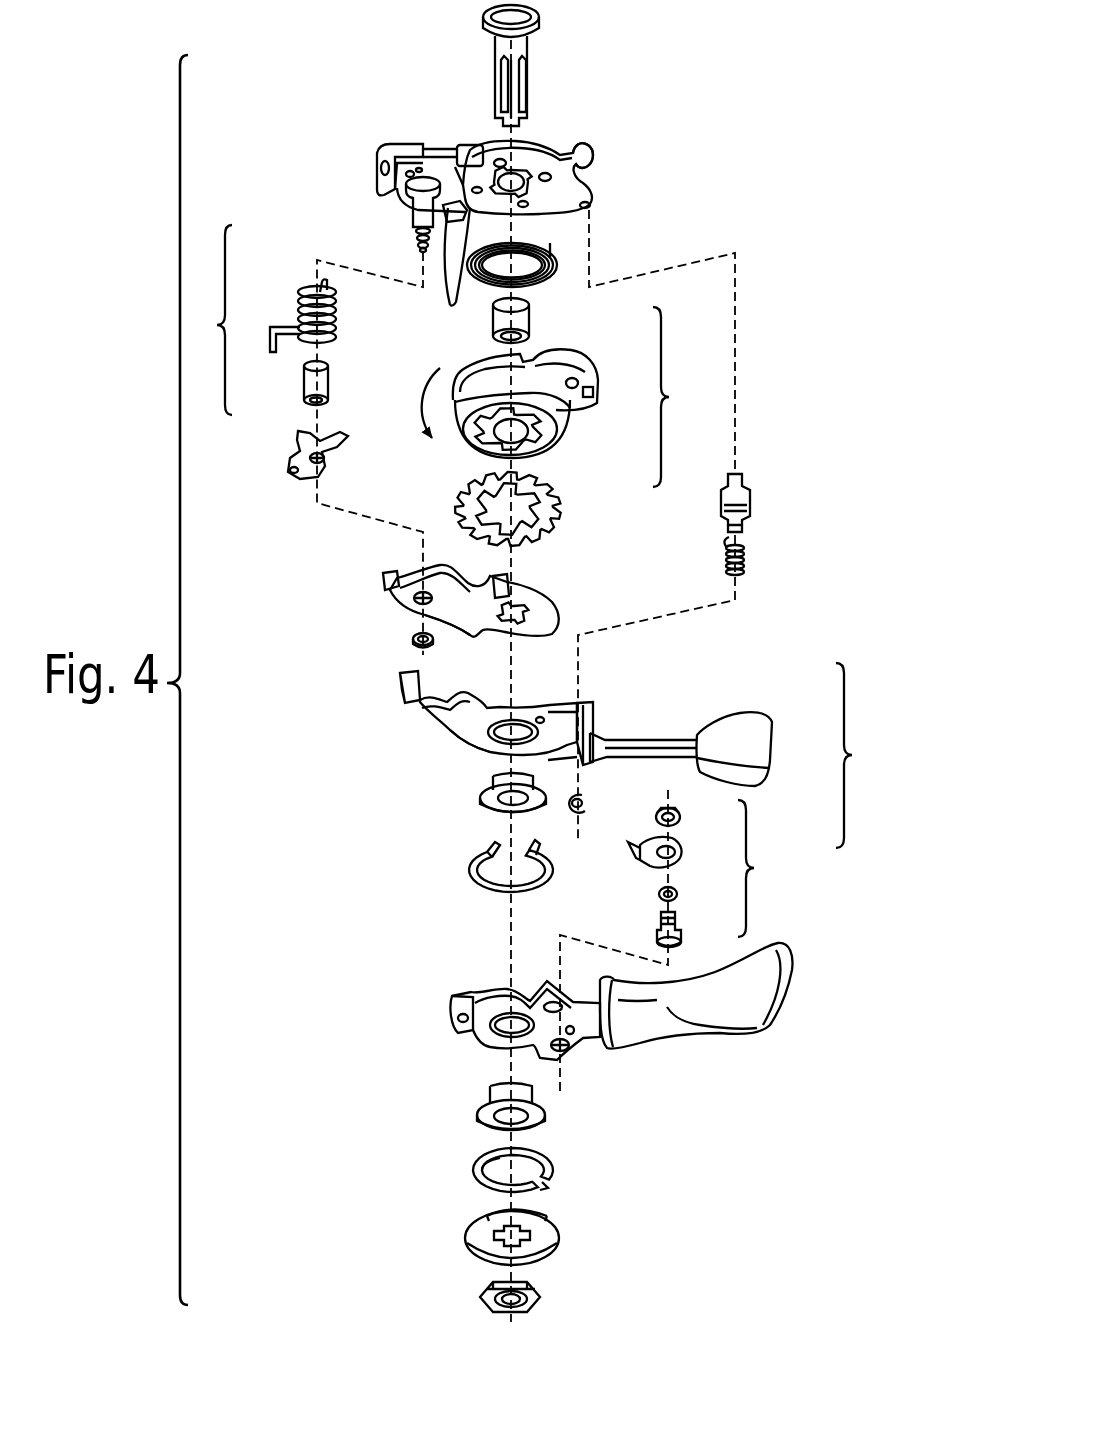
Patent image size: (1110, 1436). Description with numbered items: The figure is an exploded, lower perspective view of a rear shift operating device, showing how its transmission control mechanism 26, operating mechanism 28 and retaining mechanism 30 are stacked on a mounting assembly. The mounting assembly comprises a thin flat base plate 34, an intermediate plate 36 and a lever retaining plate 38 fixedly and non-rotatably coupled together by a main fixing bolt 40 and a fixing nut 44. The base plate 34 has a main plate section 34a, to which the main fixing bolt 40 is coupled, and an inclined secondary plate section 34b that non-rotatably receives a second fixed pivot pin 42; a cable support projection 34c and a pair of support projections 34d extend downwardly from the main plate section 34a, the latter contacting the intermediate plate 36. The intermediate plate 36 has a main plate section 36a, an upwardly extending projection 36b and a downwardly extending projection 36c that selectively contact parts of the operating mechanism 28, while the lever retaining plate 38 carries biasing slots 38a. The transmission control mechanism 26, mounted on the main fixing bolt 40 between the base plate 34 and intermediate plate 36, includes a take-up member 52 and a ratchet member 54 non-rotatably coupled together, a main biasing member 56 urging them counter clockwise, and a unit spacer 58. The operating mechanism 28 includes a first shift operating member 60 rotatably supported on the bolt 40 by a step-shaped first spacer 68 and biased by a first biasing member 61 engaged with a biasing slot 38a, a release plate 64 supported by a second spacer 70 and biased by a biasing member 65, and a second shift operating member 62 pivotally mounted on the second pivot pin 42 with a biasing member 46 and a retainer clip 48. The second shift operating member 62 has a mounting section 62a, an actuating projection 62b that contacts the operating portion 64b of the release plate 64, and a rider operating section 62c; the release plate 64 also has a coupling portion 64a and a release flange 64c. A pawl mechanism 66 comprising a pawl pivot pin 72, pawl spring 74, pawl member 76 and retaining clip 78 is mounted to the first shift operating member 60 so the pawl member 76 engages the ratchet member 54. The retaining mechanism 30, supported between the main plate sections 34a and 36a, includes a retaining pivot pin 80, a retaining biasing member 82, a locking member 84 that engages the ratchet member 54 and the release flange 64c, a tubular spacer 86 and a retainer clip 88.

The transmission control mechanism 26 is at (681, 397).
The operating mechanism 28 is at (860, 755).
The retaining mechanism 30 is at (207, 320).
The base plate 34 is at (553, 141).
The main plate section 34a is at (503, 142).
The secondary plate section 34b is at (593, 194).
The cable support projection 34c is at (377, 170).
The support projections 34d is at (453, 270).
The intermediate plate 36 is at (414, 610).
The main plate section 36a is at (465, 635).
The upwardly extending projection 36b is at (388, 582).
The downwardly extending projection 36c is at (480, 638).
The lever retaining plate 38 is at (513, 1228).
The biasing slot 38a is at (490, 1214).
The main fixing bolt 40 is at (547, 46).
The second fixed pivot pin 42 is at (755, 497).
The fixing nut 44 is at (546, 1294).
The biasing member 46 is at (748, 566).
The retainer clip 48 is at (578, 814).
The take-up member 52 is at (603, 402).
The ratchet member 54 is at (556, 506).
The main biasing member 56 is at (557, 278).
The unit spacer 58 is at (532, 322).
The first shift operating member 60 is at (792, 940).
The first biasing member 61 is at (476, 1160).
The second shift operating member 62 is at (694, 742).
The mounting section 62a is at (592, 734).
The actuating projection 62b is at (588, 720).
The rider operating section 62c is at (769, 771).
The release plate 64 is at (571, 677).
The coupling portion 64a is at (500, 741).
The operating portion 64b is at (553, 685).
The release flange 64c is at (401, 690).
The biasing member 65 is at (480, 862).
The pawl mechanism 66 is at (762, 868).
The first spacer 68 is at (478, 1109).
The second spacer 70 is at (485, 800).
The pawl pivot pin 72 is at (681, 931).
The pawl spring 74 is at (678, 893).
The pawl member 76 is at (683, 848).
The retaining clip 78 is at (676, 815).
The retaining pivot pin 80 is at (405, 225).
The retaining biasing member 82 is at (297, 300).
The locking member 84 is at (295, 452).
The tubular spacer 86 is at (303, 385).
The retainer clip 88 is at (412, 640).